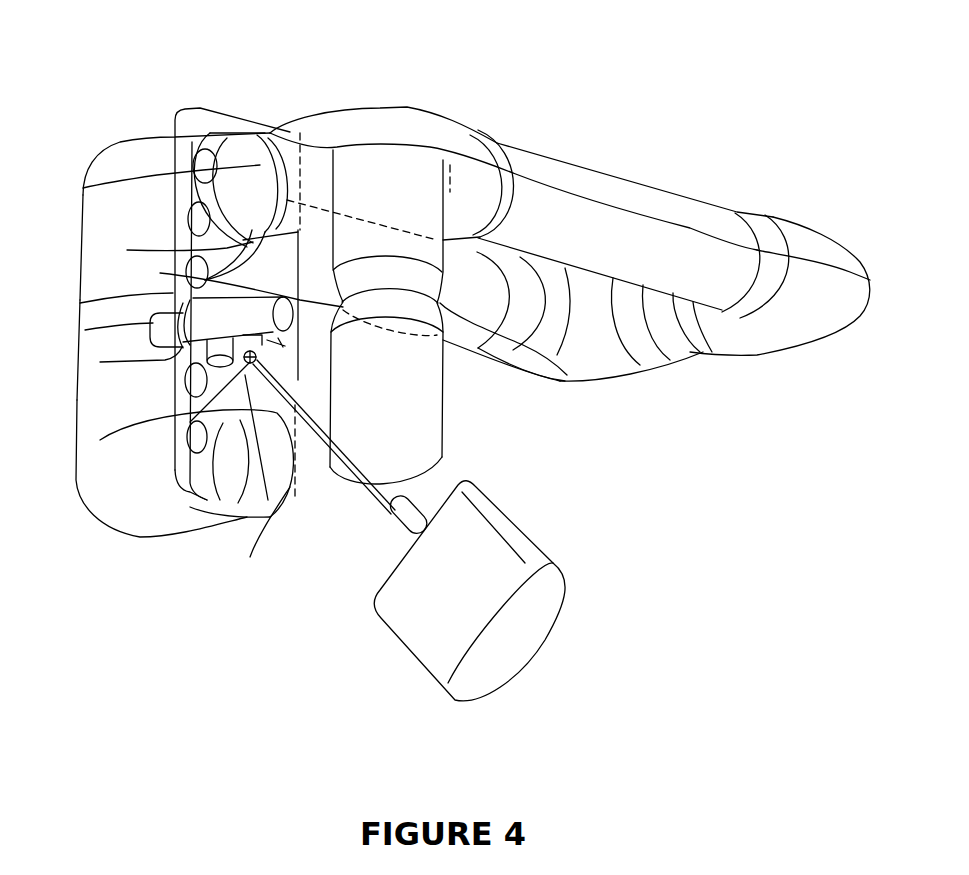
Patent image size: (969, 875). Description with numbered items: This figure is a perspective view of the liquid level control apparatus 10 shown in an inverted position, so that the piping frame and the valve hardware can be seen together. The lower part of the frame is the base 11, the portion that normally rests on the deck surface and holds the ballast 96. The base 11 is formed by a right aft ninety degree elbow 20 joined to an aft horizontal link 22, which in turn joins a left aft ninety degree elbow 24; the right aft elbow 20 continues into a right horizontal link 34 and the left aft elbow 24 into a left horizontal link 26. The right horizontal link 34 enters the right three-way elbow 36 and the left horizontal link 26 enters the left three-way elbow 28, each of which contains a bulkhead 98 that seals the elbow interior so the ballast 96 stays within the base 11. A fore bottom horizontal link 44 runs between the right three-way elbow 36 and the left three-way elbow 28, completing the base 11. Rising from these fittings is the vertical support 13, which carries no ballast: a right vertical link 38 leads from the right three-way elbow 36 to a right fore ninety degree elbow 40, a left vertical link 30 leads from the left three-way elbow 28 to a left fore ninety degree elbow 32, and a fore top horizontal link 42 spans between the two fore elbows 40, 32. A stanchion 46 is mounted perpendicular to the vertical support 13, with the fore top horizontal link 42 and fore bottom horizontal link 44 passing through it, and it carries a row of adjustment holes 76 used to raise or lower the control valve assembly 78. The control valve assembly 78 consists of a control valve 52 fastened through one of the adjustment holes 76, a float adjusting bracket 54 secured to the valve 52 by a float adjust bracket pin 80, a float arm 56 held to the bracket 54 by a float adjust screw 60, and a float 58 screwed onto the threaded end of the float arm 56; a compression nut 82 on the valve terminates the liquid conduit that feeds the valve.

The liquid level control apparatus 10 is at (571, 60).
The base 11 is at (636, 138).
The vertical support 13 is at (68, 143).
The right aft 90 degree elbow 20 is at (872, 296).
The aft horizontal link 22 is at (687, 357).
The left aft 90 degree elbow 24 is at (604, 376).
The left horizontal link 26 is at (447, 345).
The left 3-way elbow 28 is at (82, 237).
The left vertical link 30 is at (80, 335).
The left fore 90 degree elbow 32 is at (103, 532).
The right horizontal link 34 is at (683, 197).
The right 3-way elbow 36 is at (387, 107).
The right vertical link 38 is at (567, 375).
The right fore 90 degree elbow 40 is at (443, 440).
The fore top horizontal link 42 is at (253, 133).
The fore bottom horizontal link 44 is at (257, 520).
The stanchion 46 is at (200, 107).
The control valve 52 is at (200, 420).
The float adjusting bracket 54 is at (250, 557).
The float arm 56 is at (372, 476).
The float 58 is at (428, 678).
The float adjust screw 60 is at (207, 509).
The adjustment holes 76 is at (197, 272).
The control valve assembly 78 is at (347, 530).
The float adjust bracket pin 80 is at (305, 392).
The compression nut 82 is at (167, 350).
The ballast 96 is at (793, 255).
The bulkhead 98 is at (467, 132).